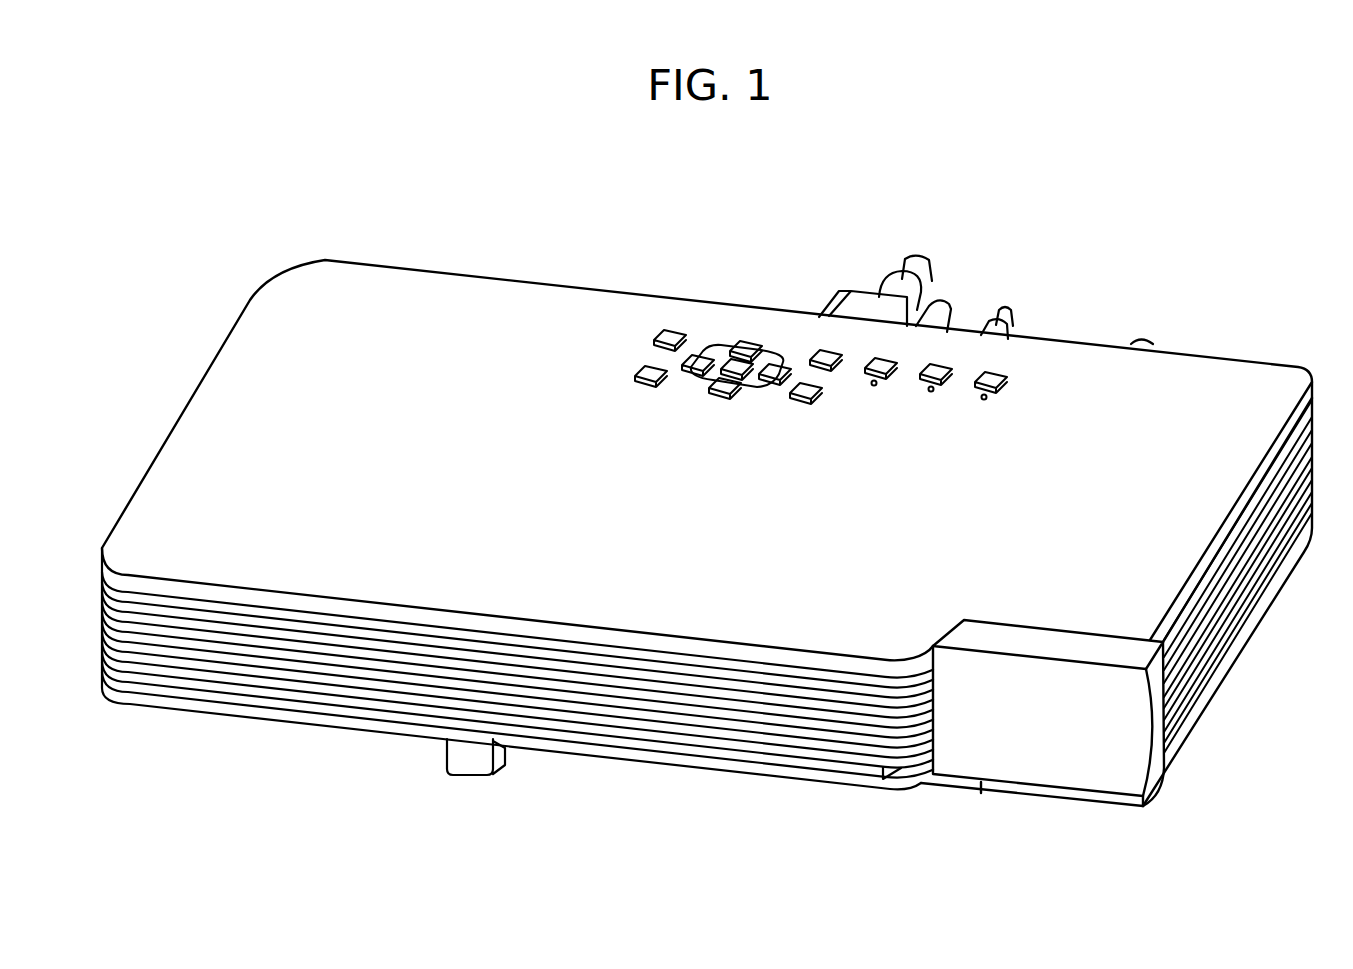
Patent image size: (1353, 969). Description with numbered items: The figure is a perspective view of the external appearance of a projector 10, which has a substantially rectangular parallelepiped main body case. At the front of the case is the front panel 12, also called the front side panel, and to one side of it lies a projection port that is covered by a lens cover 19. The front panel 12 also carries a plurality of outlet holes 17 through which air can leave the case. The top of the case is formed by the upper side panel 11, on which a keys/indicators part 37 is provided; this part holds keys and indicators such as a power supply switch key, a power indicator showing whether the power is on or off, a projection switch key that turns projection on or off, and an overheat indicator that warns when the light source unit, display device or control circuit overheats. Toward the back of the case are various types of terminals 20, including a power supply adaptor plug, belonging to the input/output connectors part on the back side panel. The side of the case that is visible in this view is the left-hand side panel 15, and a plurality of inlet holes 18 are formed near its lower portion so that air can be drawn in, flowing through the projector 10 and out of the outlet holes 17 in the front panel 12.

The projector 10 is at (658, 236).
The upper side panel 11 is at (460, 316).
The front panel 12 is at (596, 746).
The left-hand side panel 15 is at (1243, 642).
The outlet holes 17 is at (705, 765).
The inlet holes 18 is at (1277, 554).
The lens cover 19 is at (1069, 767).
The terminals 20 is at (976, 275).
The keys/indicators part 37 is at (758, 326).